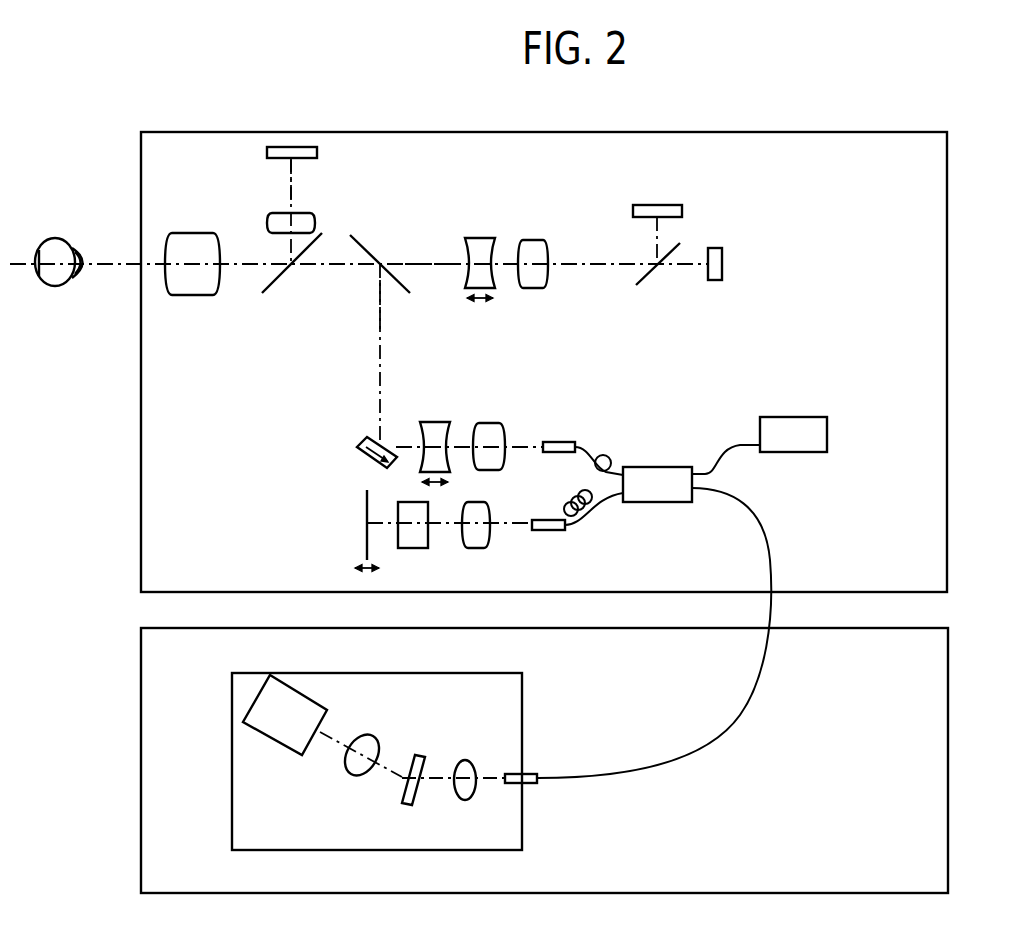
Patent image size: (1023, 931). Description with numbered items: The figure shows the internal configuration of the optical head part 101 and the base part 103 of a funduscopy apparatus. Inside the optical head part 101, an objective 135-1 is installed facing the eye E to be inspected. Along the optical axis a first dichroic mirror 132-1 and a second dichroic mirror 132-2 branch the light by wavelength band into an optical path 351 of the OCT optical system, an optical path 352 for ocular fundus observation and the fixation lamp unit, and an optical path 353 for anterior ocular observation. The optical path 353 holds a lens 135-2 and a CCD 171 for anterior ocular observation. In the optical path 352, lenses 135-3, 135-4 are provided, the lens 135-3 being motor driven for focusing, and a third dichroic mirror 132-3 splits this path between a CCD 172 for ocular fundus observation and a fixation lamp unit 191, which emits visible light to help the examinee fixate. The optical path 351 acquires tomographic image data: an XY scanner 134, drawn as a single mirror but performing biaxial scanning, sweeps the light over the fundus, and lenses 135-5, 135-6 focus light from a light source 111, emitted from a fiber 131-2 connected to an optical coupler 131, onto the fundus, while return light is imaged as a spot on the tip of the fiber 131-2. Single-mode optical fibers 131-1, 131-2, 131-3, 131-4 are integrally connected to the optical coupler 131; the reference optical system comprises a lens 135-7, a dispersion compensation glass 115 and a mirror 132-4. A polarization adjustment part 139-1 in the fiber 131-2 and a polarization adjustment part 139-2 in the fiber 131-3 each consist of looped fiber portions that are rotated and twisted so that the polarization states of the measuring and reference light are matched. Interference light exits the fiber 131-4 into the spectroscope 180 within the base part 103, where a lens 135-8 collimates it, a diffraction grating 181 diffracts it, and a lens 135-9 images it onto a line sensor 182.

The eye to be inspected E is at (57, 287).
The optical head part 101 is at (947, 346).
The base part 103 is at (948, 733).
The light source 111 is at (770, 418).
The dispersion compensation glass 115 is at (413, 548).
The optical coupler 131 is at (706, 487).
The optical fiber 131-1 is at (713, 452).
The optical fiber 131-2 is at (583, 446).
The optical fiber 131-3 is at (607, 495).
The optical fiber 131-4 is at (730, 500).
The first dichroic mirror 132-1 is at (277, 280).
The second dichroic mirror 132-2 is at (372, 245).
The third dichroic mirror 132-3 is at (670, 249).
The mirror 132-4 is at (365, 522).
The XY scanner 134 is at (358, 445).
The objective 135-1 is at (193, 295).
The lens 135-2 is at (267, 224).
The lens 135-3 is at (482, 237).
The lens 135-4 is at (535, 240).
The lens 135-5 is at (435, 420).
The lens 135-6 is at (490, 423).
The lens 135-7 is at (485, 548).
The lens 135-8 is at (470, 800).
The lens 135-9 is at (348, 775).
The polarization adjustment part 139-1 is at (637, 436).
The polarization adjustment part 139-2 is at (566, 495).
The CCD for anterior ocular observation 171 is at (267, 153).
The CCD for ocular fundus observation 172 is at (660, 204).
The spectroscope 180 is at (285, 673).
The diffraction grating 181 is at (420, 755).
The line sensor 182 is at (270, 740).
The fixation lamp unit 191 is at (722, 262).
The optical path of OCT optical system 351 is at (380, 307).
The optical path for ocular fundus observation and fixation lamp unit 352 is at (427, 260).
The optical path for anterior ocular observation 353 is at (293, 172).